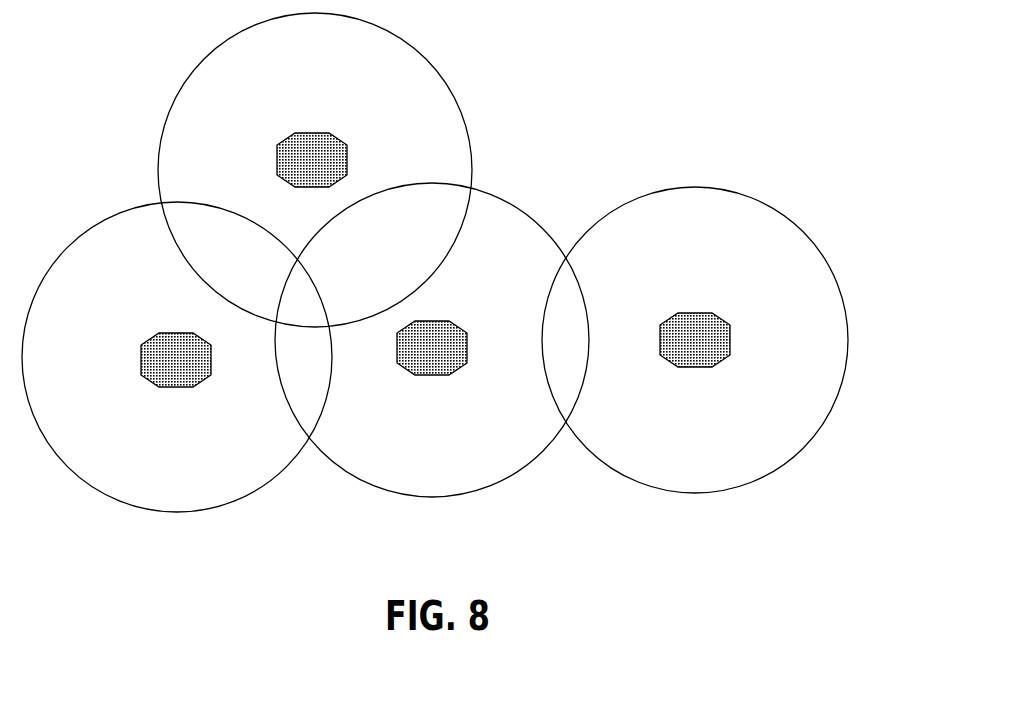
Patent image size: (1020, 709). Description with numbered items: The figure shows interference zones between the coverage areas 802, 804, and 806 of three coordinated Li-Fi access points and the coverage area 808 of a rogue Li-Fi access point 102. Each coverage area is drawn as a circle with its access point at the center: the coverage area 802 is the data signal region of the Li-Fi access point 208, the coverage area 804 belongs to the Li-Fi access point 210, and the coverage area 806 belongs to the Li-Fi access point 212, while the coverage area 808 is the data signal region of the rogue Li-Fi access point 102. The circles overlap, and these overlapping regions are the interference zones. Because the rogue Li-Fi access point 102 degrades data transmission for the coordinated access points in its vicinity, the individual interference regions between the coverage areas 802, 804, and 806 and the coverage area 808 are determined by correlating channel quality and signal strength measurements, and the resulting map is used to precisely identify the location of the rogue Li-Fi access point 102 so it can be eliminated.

The coverage area 802 is at (163, 511).
The coverage area 804 is at (447, 82).
The coverage area 806 is at (766, 203).
The coverage area 808 is at (503, 202).
The rogue Li-Fi access point 102 is at (432, 348).
The Li-Fi access point 208 is at (176, 360).
The Li-Fi access point 210 is at (312, 160).
The Li-Fi access point 212 is at (695, 340).